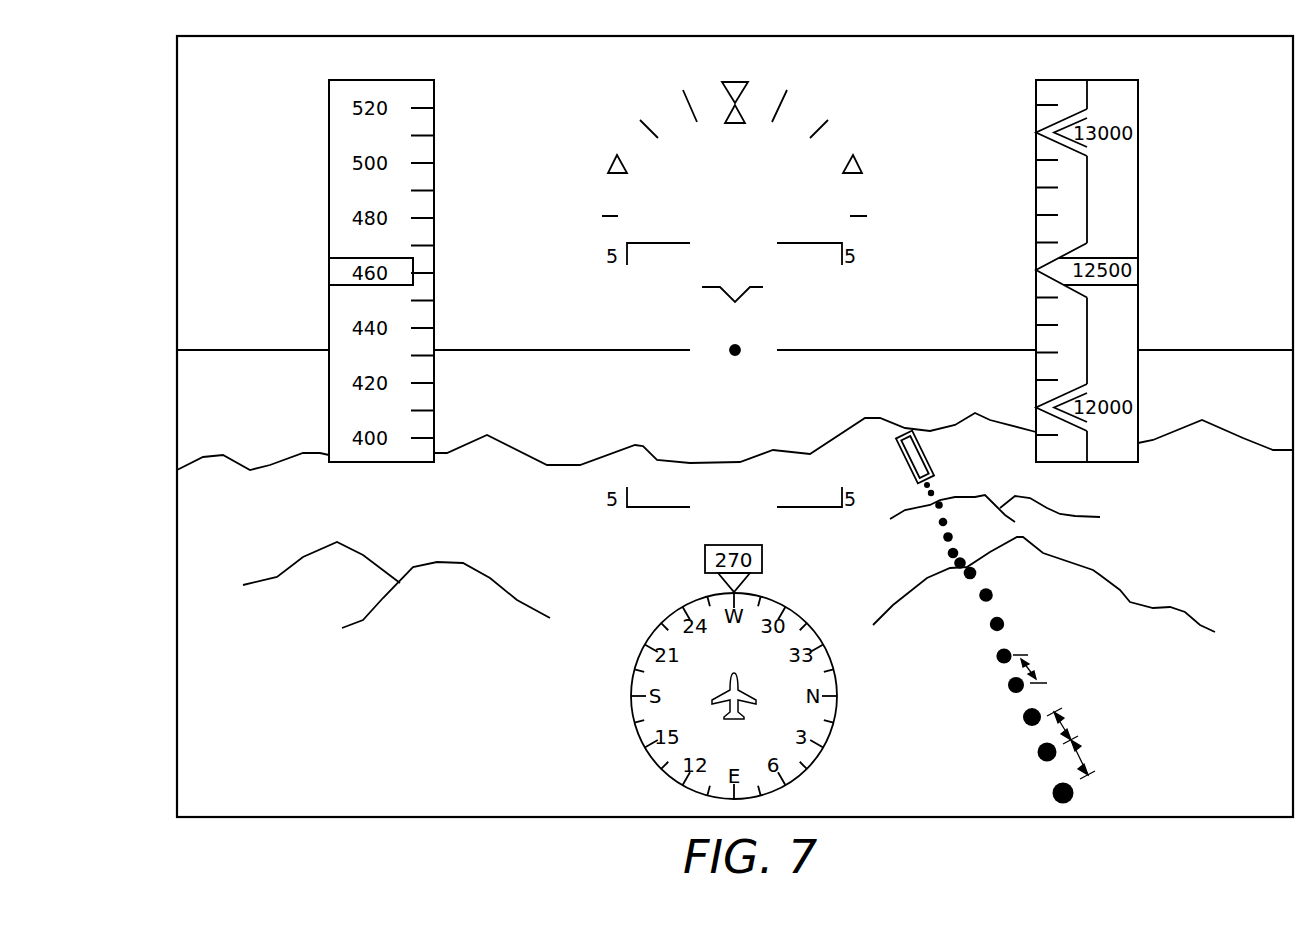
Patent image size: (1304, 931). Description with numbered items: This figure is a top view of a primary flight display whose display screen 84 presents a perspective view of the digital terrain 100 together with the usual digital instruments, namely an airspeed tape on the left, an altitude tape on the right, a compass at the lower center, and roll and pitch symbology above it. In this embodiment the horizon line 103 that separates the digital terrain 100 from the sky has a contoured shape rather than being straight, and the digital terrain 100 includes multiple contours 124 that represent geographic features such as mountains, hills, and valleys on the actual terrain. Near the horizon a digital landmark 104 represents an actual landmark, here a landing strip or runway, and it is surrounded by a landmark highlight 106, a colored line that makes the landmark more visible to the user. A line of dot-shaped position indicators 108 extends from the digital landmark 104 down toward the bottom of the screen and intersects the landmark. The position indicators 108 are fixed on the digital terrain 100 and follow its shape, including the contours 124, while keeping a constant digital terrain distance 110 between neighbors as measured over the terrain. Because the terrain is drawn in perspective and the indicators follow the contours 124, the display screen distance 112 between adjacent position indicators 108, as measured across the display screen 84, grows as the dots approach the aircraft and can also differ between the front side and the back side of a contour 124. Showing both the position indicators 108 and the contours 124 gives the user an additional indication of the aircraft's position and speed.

The display screen 84 is at (192, 36).
The digital terrain 100 is at (1259, 477).
The horizon line 103 is at (222, 451).
The digital landmark 104 is at (893, 456).
The landmark highlight 106 is at (935, 460).
The position indicators 108 is at (964, 574).
The digital terrain distance 110 is at (1040, 670).
The display screen distance 112 is at (1062, 722).
The contours 124 is at (306, 553).